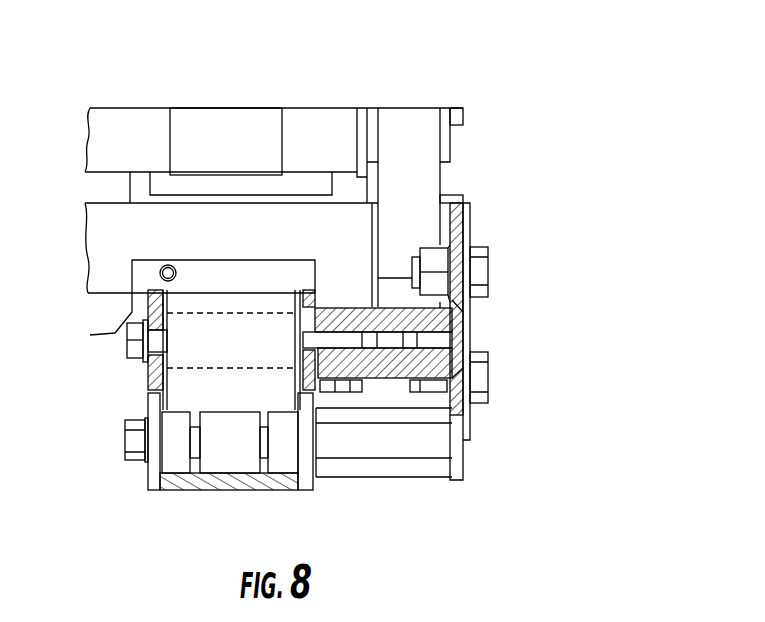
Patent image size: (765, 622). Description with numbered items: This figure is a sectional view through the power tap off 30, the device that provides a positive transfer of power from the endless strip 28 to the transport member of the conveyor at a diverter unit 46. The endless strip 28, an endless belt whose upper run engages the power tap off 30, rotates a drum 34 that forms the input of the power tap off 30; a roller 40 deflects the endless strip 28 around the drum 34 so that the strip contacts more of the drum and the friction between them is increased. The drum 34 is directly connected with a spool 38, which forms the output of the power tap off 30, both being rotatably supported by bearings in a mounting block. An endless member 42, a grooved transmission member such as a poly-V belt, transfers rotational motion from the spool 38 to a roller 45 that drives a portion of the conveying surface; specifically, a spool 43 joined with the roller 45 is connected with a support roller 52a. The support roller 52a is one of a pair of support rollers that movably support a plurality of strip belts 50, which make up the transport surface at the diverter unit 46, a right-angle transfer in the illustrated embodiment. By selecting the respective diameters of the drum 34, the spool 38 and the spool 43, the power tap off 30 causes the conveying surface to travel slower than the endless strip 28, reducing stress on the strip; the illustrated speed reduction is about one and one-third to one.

The diverter unit 46 is at (483, 56).
The support roller 52a is at (113, 120).
The strip belt 50 is at (222, 106).
The roller 45 is at (333, 106).
The spool 43 is at (452, 108).
The endless member 42 is at (442, 178).
The power tap off 30 is at (473, 327).
The spool 38 is at (390, 380).
The drum 34 is at (148, 370).
The endless strip 28 is at (160, 395).
The roller 40 is at (148, 467).